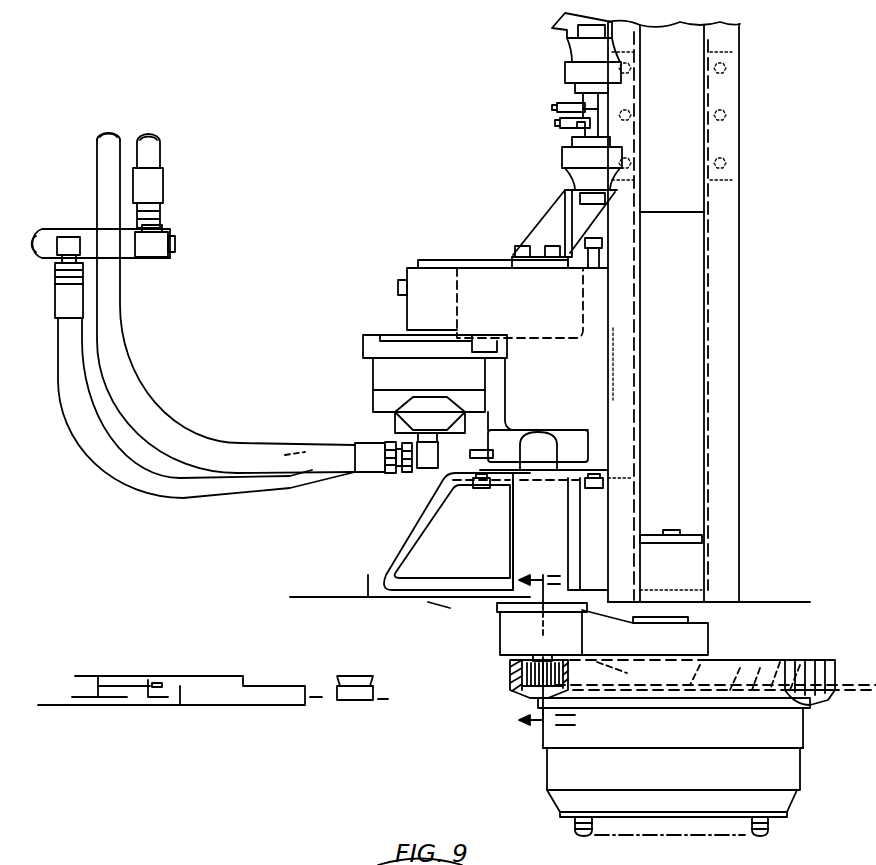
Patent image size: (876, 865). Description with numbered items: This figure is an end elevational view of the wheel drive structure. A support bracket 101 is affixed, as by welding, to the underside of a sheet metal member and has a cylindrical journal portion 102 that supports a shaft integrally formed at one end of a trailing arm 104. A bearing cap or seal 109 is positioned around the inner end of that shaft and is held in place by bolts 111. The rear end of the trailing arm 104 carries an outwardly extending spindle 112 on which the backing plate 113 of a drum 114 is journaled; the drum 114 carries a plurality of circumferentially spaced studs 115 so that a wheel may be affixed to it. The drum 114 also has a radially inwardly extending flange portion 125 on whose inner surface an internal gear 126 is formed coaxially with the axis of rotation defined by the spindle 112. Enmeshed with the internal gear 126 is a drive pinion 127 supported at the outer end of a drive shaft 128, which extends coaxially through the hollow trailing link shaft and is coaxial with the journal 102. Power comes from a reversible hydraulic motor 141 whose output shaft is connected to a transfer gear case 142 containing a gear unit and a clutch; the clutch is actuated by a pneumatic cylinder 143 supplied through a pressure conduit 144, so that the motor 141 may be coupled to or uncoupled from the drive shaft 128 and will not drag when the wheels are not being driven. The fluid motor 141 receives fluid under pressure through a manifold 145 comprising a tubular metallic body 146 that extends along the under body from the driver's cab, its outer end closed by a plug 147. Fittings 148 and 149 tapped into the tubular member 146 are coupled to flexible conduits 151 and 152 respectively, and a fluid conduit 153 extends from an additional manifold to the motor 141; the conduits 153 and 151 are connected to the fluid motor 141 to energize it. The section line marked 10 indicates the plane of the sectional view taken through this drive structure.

The section line 10- 10 is at (530, 648).
The support bracket 101 is at (368, 568).
The cylindrical journal portion 102 is at (510, 523).
The trailing arm 104 is at (518, 632).
The bearing cap or seal 109 is at (470, 460).
The bolts 111 is at (480, 490).
The spindle 112 is at (730, 652).
The backing plate 113 is at (767, 652).
The drum 114 is at (745, 738).
The studs 115 is at (573, 824).
The flange portion 125 is at (510, 686).
The internal gear 126 is at (810, 660).
The drive pinion 127 is at (510, 668).
The drive shaft 128 is at (573, 657).
The reversible hydraulic motor 141 is at (388, 377).
The transfer gear case 142 is at (437, 273).
The pneumatic cylinder 143 is at (572, 160).
The pressure conduit 144 is at (570, 125).
The manifold 145 is at (190, 247).
The tubular metallic body 146 is at (47, 228).
The plug 147 is at (177, 243).
The fitting 148 is at (85, 260).
The fitting 149 is at (157, 210).
The flexible conduit 151 is at (78, 398).
The flexible conduit 152 is at (158, 148).
The fluid conduit 153 is at (115, 338).